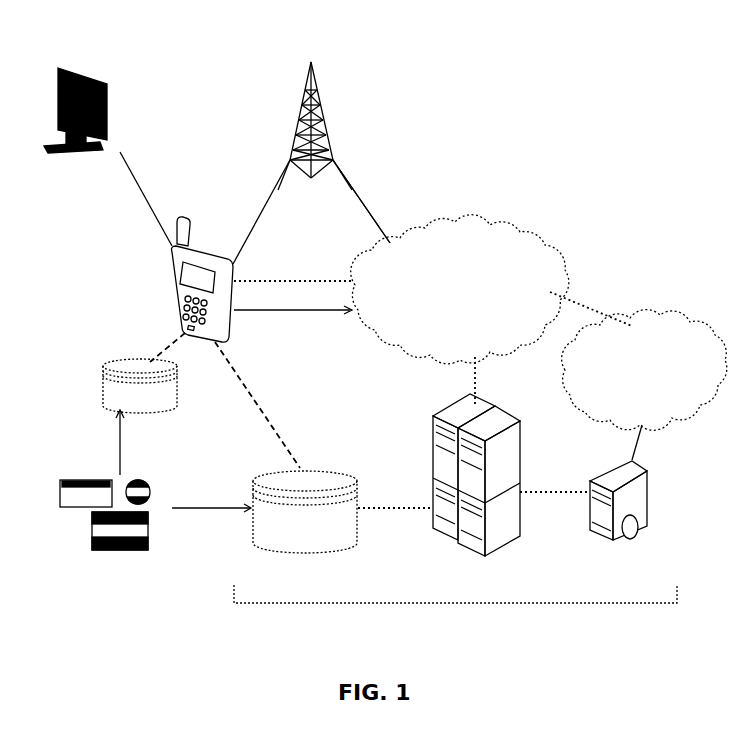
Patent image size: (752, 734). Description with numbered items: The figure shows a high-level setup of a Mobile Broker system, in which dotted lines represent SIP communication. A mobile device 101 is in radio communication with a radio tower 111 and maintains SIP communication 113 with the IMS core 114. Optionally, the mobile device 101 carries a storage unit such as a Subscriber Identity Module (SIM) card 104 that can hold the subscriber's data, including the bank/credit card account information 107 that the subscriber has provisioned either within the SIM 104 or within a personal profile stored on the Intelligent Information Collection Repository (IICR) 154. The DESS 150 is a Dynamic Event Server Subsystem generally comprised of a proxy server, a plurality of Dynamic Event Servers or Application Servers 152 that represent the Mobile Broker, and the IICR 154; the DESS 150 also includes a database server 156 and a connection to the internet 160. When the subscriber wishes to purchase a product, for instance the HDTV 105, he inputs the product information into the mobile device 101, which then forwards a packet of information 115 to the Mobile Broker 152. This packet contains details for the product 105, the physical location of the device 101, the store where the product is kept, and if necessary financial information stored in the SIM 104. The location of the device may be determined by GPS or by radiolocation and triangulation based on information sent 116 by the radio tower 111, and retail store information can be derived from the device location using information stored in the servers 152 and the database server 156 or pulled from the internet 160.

The mobile device 101 is at (166, 276).
The Subscriber Identity Module (SIM) card 104 is at (103, 368).
The HDTV 105 is at (72, 66).
The bank/credit card account information 107 is at (56, 495).
The radio tower 111 is at (314, 72).
The SIP communication 113 is at (262, 278).
The IMS core 114 is at (532, 226).
The packet of information 115 is at (330, 316).
The information sent by radio tower 116 is at (354, 192).
The Dynamic Event Server Subsystem (DESS) 150 is at (447, 603).
The Dynamic Event Servers or Application Servers 152 is at (432, 412).
The Intelligent Information Collection Repository (IICR) 154 is at (306, 548).
The database server 156 is at (648, 495).
The internet 160 is at (688, 320).